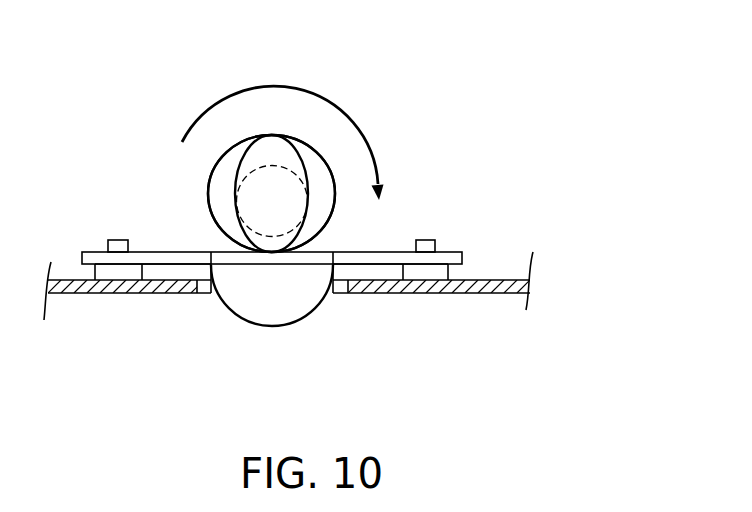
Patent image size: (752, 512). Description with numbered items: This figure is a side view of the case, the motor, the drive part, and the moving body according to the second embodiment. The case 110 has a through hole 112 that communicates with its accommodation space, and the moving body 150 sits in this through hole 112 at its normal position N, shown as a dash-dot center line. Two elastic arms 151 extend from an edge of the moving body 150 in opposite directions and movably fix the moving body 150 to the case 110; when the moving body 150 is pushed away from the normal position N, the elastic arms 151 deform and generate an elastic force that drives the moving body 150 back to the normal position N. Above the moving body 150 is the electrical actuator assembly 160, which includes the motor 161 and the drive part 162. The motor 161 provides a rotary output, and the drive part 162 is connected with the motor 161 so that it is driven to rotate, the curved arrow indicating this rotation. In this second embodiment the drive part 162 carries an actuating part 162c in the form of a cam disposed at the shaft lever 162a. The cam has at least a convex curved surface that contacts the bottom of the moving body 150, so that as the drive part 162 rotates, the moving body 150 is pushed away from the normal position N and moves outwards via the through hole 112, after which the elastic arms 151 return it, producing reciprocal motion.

The case 110 is at (450, 295).
The through hole 112 is at (337, 297).
The moving body 150 is at (270, 298).
The elastic arm 151 is at (158, 255).
The electrical actuator assembly 160 is at (312, 120).
The motor 161 is at (210, 170).
The drive part 162 is at (330, 127).
The shaft lever 162a is at (257, 180).
The actuating part 162c is at (282, 148).
The normal position N is at (30, 258).